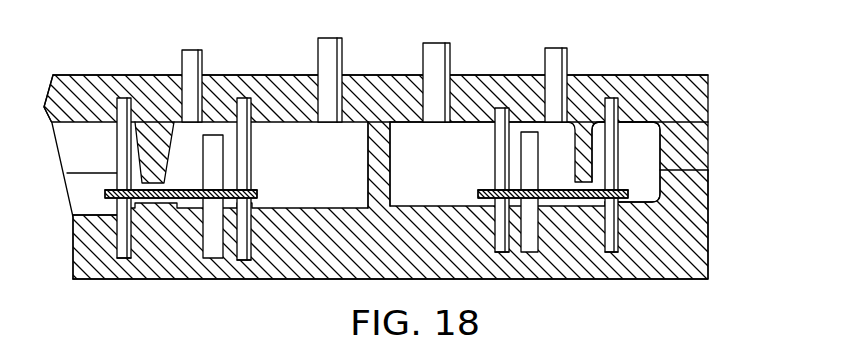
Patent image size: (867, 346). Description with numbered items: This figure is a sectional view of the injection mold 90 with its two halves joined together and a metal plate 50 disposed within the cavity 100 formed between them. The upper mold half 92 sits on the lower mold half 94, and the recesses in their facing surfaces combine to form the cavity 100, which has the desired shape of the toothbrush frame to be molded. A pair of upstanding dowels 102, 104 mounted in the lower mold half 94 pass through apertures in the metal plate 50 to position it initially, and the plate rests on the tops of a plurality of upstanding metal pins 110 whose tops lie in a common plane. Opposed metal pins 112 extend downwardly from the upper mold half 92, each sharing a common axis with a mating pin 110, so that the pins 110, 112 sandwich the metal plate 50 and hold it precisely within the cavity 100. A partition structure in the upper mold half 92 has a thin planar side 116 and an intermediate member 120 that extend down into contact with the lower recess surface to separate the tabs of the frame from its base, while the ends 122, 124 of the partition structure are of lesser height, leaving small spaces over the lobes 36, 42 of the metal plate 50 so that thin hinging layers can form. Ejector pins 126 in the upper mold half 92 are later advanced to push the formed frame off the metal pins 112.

The lobe 36 is at (258, 193).
The lobe 42 is at (480, 190).
The metal plate 50 is at (187, 182).
The injection mold 90 is at (712, 154).
The upper mold half 92 is at (592, 73).
The lower mold half 94 is at (624, 284).
The cavity 100 is at (100, 130).
The dowel 102 is at (218, 247).
The dowel 104 is at (537, 250).
The metal pins 110 is at (123, 240).
The metal pins 112 is at (120, 148).
The side of partition structure 116 is at (407, 130).
The intermediate member 120 is at (378, 183).
The end of partition structure 122 is at (183, 130).
The end of partition structure 124 is at (587, 183).
The ejector pins 126 is at (333, 63).